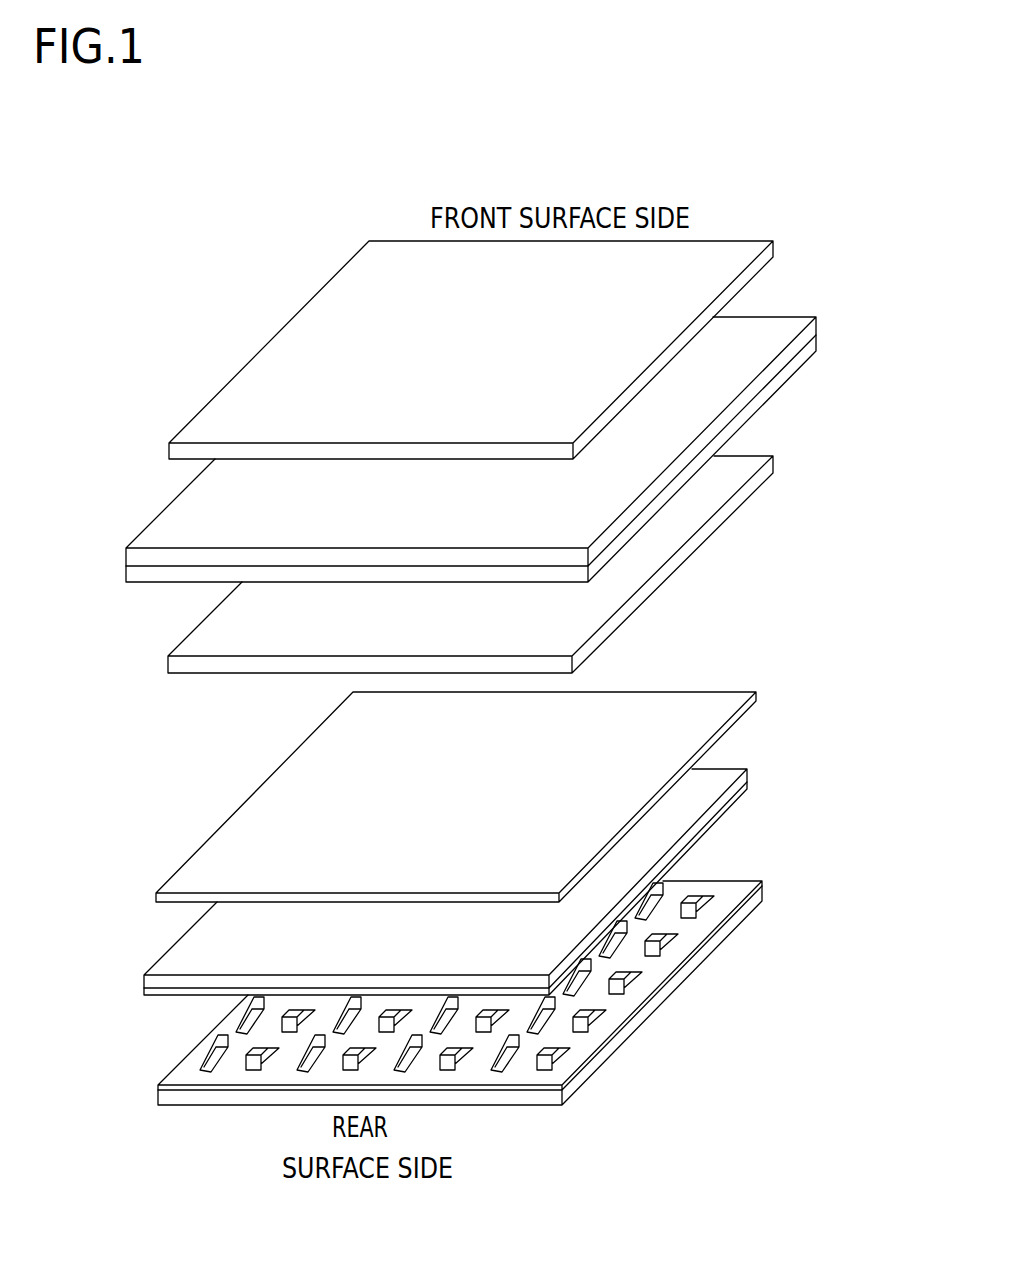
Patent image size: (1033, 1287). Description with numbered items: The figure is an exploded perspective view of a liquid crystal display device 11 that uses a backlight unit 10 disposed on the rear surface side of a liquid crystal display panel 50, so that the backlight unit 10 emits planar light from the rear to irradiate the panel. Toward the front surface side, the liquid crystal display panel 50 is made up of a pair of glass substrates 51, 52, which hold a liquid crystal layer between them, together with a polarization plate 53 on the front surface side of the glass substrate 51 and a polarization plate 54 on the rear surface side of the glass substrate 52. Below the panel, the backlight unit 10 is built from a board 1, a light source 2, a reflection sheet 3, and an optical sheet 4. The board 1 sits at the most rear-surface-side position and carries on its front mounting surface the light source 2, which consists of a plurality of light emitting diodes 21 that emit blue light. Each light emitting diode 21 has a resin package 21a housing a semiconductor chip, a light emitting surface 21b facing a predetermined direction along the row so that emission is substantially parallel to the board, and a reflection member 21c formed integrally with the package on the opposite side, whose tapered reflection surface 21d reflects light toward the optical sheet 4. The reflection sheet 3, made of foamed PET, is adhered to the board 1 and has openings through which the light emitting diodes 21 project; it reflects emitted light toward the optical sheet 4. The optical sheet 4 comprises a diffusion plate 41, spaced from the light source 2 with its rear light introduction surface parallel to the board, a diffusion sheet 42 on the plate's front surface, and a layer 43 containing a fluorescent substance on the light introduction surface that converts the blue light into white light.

The liquid crystal display device 11 is at (218, 297).
The liquid crystal display panel 50 is at (821, 240).
The polarization plate 53 is at (169, 452).
The glass substrate 51 is at (126, 557).
The glass substrate 52 is at (126, 574).
The polarization plate 54 is at (168, 666).
The backlight unit 10 is at (821, 691).
The optical sheet 4 is at (73, 882).
The diffusion sheet 42 is at (156, 897).
The diffusion plate 41 is at (144, 981).
The layer containing a fluorescent substance 43 is at (144, 991).
The reflection sheet 3 is at (158, 1087).
The board 1 is at (158, 1097).
The light source 2 is at (413, 1043).
The light emitting diode 21 is at (220, 1045).
The resin package 21a is at (215, 1068).
The light emitting surface 21b is at (543, 1072).
The reflection member 21c is at (220, 1058).
The reflection surface 21d is at (208, 1063).